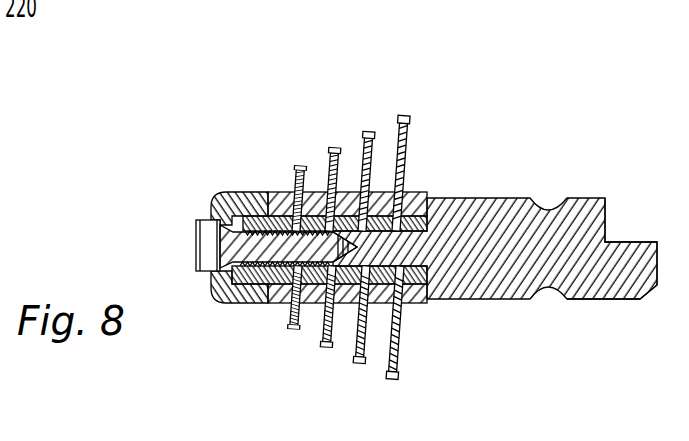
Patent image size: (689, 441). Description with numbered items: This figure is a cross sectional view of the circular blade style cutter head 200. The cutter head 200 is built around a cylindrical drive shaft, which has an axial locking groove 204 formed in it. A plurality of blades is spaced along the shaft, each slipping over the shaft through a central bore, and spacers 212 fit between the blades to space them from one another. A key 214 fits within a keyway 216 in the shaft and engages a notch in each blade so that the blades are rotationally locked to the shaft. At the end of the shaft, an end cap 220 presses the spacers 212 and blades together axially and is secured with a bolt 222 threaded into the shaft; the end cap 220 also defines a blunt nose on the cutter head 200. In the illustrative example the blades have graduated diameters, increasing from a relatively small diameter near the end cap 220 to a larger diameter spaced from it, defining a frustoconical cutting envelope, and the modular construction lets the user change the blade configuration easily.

The cutter head 200 is at (535, 91).
The axial locking groove 204 is at (547, 290).
The spacers 212 is at (383, 190).
The key 214 is at (411, 275).
The keyway 216 is at (430, 268).
The end cap 220 is at (222, 192).
The bolt 222 is at (196, 253).